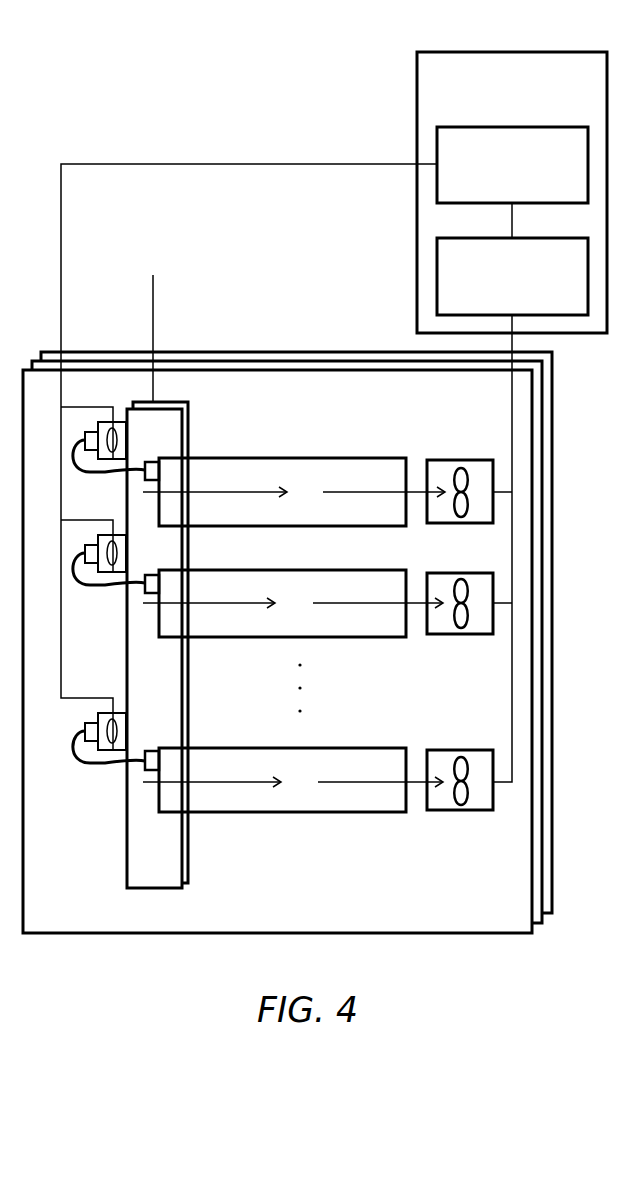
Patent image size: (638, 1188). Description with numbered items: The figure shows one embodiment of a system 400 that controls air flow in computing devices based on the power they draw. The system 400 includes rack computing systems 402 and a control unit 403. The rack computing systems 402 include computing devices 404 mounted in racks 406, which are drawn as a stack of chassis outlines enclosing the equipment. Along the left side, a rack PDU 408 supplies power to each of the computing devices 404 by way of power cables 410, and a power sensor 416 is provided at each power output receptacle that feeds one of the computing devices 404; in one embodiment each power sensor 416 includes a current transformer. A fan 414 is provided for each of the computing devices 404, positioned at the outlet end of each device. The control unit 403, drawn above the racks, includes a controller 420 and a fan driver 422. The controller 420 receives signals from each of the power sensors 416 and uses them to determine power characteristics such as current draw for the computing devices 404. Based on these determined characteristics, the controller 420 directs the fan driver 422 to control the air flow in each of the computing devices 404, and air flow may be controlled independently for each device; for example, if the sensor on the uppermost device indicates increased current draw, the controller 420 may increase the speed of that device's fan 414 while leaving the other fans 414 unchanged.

The system 400 is at (90, 64).
The rack computing systems 402 is at (295, 322).
The control unit 403 is at (512, 192).
The computing devices 404 is at (326, 458).
The racks 406 is at (287, 642).
The rack PDUs 408 is at (189, 430).
The power cables 410 is at (85, 766).
The fans 414 is at (459, 460).
The power sensors 416 is at (103, 474).
The controller 420 is at (512, 165).
The fan driver 422 is at (512, 276).